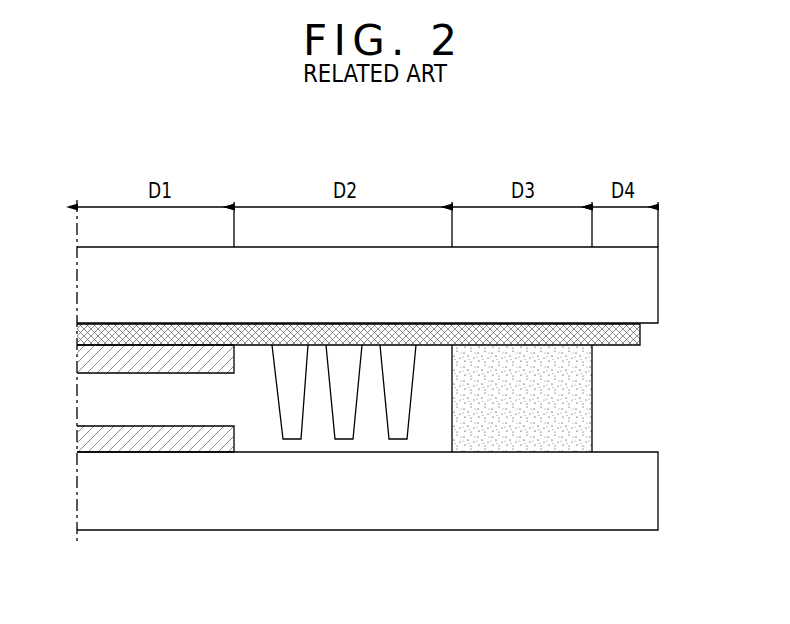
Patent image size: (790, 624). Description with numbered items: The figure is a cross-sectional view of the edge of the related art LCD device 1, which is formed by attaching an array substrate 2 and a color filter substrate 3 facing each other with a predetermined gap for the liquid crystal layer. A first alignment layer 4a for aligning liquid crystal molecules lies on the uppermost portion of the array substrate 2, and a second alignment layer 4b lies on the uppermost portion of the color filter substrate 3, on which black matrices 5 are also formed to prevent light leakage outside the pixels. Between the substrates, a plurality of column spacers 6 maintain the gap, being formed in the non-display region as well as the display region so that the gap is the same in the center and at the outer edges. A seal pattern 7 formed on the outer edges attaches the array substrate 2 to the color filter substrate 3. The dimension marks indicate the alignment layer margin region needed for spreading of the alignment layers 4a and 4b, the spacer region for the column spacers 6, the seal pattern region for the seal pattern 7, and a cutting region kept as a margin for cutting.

The related art LCD device 1 is at (716, 196).
The array substrate 2 is at (652, 487).
The color filter substrate 3 is at (652, 287).
The first alignment layer 4a is at (80, 438).
The second alignment layer 4b is at (80, 358).
The black matrices 5 is at (632, 335).
The column spacers 6 is at (347, 430).
The seal pattern 7 is at (585, 397).